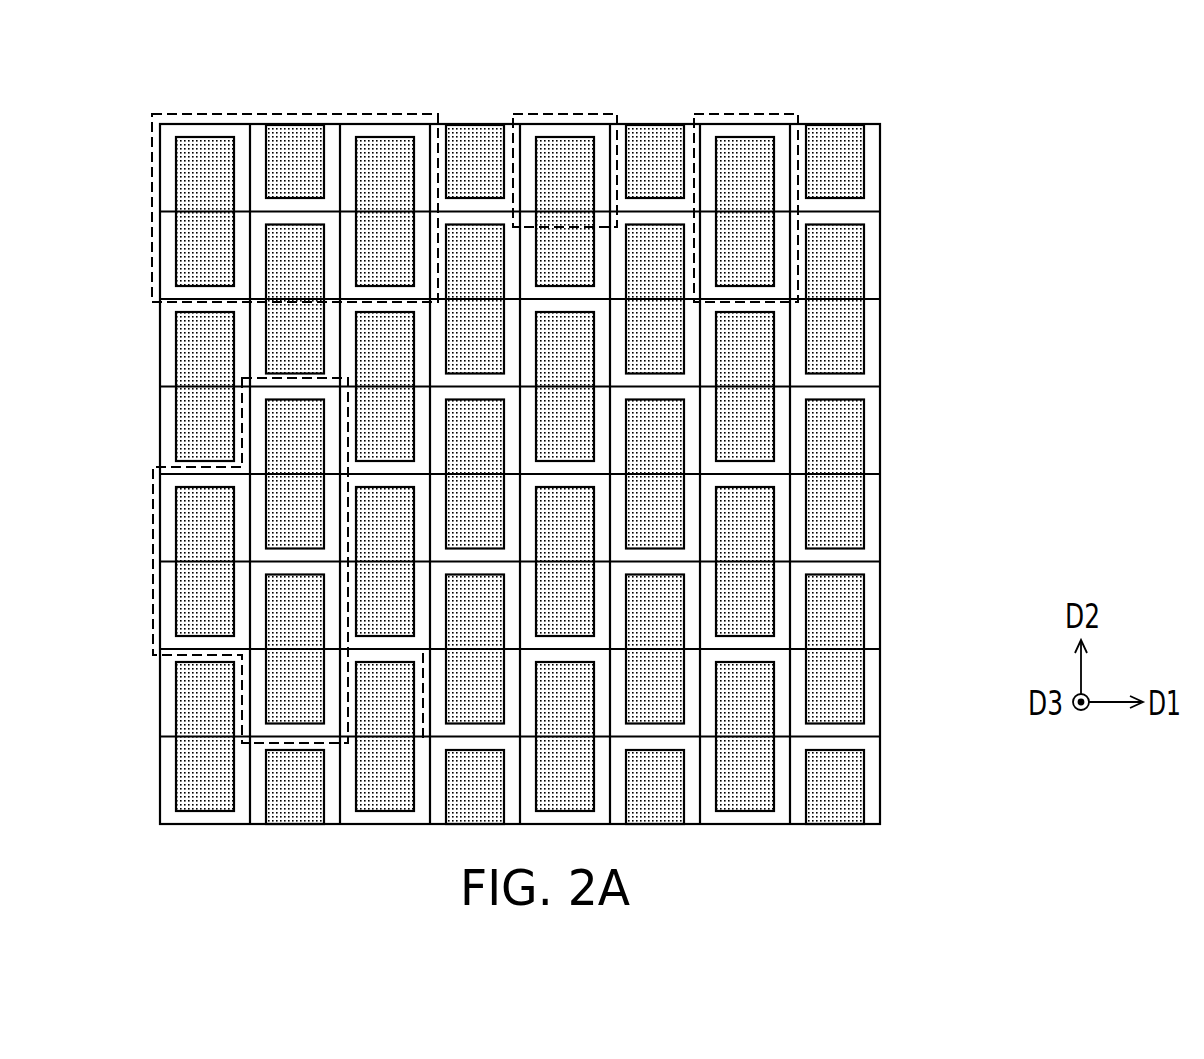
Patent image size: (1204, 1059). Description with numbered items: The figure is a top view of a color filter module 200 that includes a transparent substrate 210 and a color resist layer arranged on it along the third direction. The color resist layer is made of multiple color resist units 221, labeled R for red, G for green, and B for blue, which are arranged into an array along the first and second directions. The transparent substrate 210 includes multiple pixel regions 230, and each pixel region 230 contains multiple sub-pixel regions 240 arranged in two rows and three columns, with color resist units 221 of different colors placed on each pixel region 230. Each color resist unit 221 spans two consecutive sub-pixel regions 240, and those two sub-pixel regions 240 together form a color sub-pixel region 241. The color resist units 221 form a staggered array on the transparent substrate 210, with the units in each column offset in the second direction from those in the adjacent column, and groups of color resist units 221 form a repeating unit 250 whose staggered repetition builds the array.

The color filter module 200 is at (594, 418).
The transparent substrate 210 is at (880, 366).
The color resist unit 221 is at (863, 494).
The pixel region 230 is at (213, 112).
The sub-pixel region 240 is at (566, 112).
The color sub-pixel region 241 is at (748, 112).
The repeating unit 250 is at (153, 491).